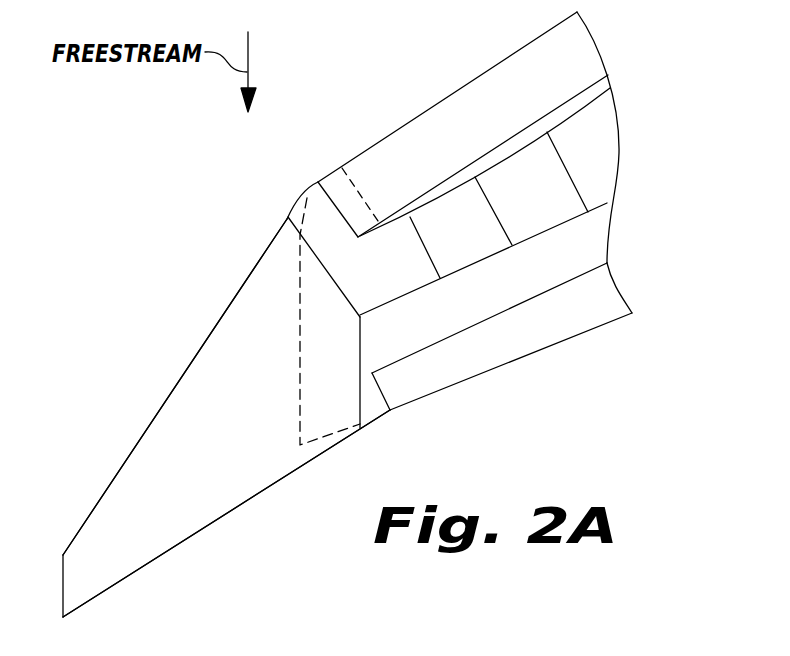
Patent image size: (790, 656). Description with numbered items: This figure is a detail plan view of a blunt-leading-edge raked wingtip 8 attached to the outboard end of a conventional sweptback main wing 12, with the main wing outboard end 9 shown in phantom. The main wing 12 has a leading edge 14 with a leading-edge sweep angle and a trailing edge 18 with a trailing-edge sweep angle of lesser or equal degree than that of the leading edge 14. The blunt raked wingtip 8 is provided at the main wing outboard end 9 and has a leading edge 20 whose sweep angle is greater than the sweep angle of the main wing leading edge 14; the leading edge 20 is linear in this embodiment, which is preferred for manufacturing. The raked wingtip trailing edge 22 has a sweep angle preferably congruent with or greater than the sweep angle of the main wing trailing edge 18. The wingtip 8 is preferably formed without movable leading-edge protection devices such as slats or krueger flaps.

The blunt-leading-edge raked wingtip 8 is at (127, 561).
The main wing outboard end 9 is at (320, 213).
The main wing 12 is at (535, 192).
The leading edge 14 is at (490, 68).
The trailing edge 18 is at (503, 367).
The leading edge 20 is at (150, 423).
The trailing edge 22 is at (213, 518).